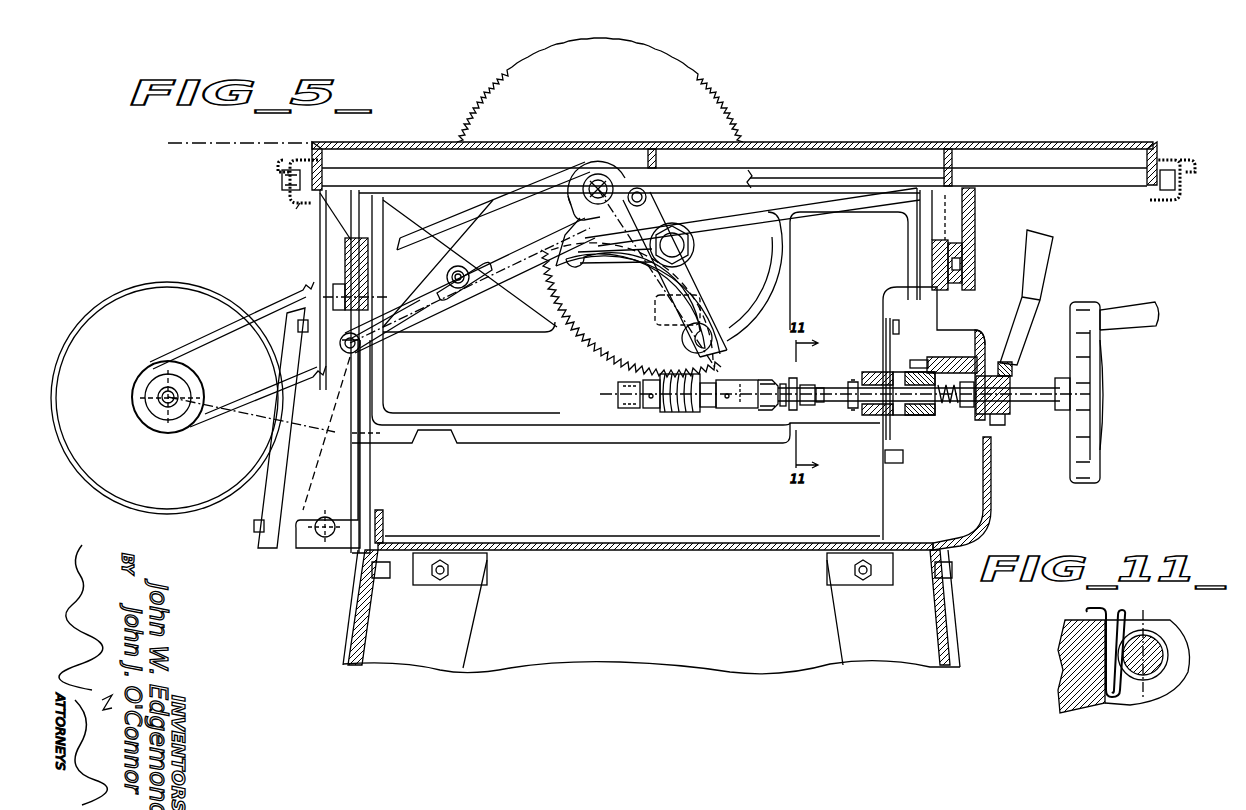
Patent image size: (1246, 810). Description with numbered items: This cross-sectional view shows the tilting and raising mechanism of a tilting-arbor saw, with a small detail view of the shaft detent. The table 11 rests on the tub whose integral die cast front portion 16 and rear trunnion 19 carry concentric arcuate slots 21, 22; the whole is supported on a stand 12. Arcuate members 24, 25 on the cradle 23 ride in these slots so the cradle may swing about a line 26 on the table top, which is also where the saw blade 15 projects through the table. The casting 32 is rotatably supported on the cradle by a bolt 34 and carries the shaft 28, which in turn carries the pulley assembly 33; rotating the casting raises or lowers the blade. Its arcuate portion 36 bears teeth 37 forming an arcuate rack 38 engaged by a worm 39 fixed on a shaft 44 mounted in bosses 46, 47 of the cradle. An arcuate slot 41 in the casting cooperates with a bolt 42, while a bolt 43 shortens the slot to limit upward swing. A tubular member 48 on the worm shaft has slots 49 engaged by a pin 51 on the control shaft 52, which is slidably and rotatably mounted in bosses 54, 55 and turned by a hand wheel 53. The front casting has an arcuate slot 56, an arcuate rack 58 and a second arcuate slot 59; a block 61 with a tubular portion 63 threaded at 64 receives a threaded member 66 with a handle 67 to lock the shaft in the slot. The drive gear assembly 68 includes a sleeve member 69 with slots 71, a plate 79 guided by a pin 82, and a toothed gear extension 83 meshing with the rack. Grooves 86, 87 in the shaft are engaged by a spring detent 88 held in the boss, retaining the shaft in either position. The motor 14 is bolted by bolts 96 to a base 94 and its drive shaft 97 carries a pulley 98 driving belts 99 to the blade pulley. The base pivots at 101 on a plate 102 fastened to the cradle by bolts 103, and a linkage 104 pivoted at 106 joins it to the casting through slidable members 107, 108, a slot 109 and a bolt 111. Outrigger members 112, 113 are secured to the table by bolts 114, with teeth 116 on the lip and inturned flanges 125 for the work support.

In FIG. 5, the table 11 is at (1018, 143).
In FIG. 5, the stand 12 is at (425, 662).
In FIG. 5, the motor 14 is at (120, 300).
In FIG. 5, the saw blade 15 is at (713, 95).
In FIG. 5, the integral die cast front portion 16 is at (976, 265).
In FIG. 5, the rear trunnion 19 is at (344, 265).
In FIG. 5, the arcuate slot 21 is at (965, 252).
In FIG. 5, the arcuate slot 22 is at (346, 260).
In FIG. 5, the cradle 23 is at (874, 210).
In FIG. 11, the cradle 23 is at (1075, 712).
In FIG. 5, the arcuate member 24 is at (935, 262).
In FIG. 5, the arcuate member 25 is at (362, 275).
In FIG. 5, the line 26 is at (216, 142).
In FIG. 5, the shaft 28 is at (598, 180).
In FIG. 5, the casting 32 is at (660, 207).
In FIG. 5, the pulley assembly 33 is at (612, 162).
In FIG. 5, the bolt 34 is at (694, 245).
In FIG. 5, the arcuate portion 36 is at (560, 307).
In FIG. 5, the teeth 37 is at (578, 338).
In FIG. 5, the arcuate rack 38 is at (586, 357).
In FIG. 5, the worm 39 is at (675, 412).
In FIG. 5, the arcuate slot 41 is at (608, 312).
In FIG. 5, the bolt 42 is at (712, 303).
In FIG. 5, the bolt 43 is at (718, 325).
In FIG. 5, the shaft 44 is at (625, 405).
In FIG. 5, the boss 46 is at (648, 406).
In FIG. 5, the boss 47 is at (707, 408).
In FIG. 5, the tubular member 48 is at (728, 408).
In FIG. 5, the slots 49 is at (762, 410).
In FIG. 5, the pin 51 is at (779, 382).
In FIG. 5, the shaft 52 is at (826, 384).
In FIG. 11, the shaft 52 is at (1160, 640).
In FIG. 5, the control hand wheel 53 is at (1105, 375).
In FIG. 5, the boss 54 is at (796, 378).
In FIG. 11, the boss 54 is at (1153, 625).
In FIG. 5, the boss 55 is at (870, 380).
In FIG. 5, the arcuate slot 56 is at (972, 362).
In FIG. 5, the arcuate rack 58 is at (928, 352).
In FIG. 5, the second arcuate slot 59 is at (995, 424).
In FIG. 5, the block 61 is at (958, 412).
In FIG. 5, the tubular portion 63 is at (1002, 414).
In FIG. 5, the threads 64 is at (1012, 380).
In FIG. 5, the threaded member 66 is at (1012, 400).
In FIG. 5, the handle 67 is at (1042, 260).
In FIG. 5, the drive gear assembly 68 is at (916, 437).
In FIG. 5, the sleeve member 69 is at (875, 408).
In FIG. 5, the slots 71 is at (850, 408).
In FIG. 5, the plate 79 is at (900, 318).
In FIG. 5, the pin 82 is at (886, 323).
In FIG. 5, the toothed gear extension 83 is at (925, 415).
In FIG. 5, the circumferential groove 86 is at (822, 404).
In FIG. 11, the circumferential groove 87 is at (1168, 657).
In FIG. 11, the spring detent 88 is at (1125, 700).
In FIG. 5, the base 94 is at (280, 548).
In FIG. 5, the bolts 96 is at (300, 318).
In FIG. 5, the drive shaft 97 is at (158, 402).
In FIG. 5, the pulley 98 is at (145, 385).
In FIG. 5, the belts 99 is at (215, 345).
In FIG. 5, the pivot 101 is at (323, 540).
In FIG. 5, the plate 102 is at (365, 503).
In FIG. 5, the bolts 103 is at (388, 412).
In FIG. 5, the linkage 104 is at (432, 276).
In FIG. 5, the pivot 106 is at (362, 348).
In FIG. 5, the slidable member 107 is at (415, 320).
In FIG. 5, the slidable member 108 is at (512, 232).
In FIG. 5, the slot 109 is at (475, 275).
In FIG. 5, the bolt 111 is at (460, 290).
In FIG. 5, the outrigger member 112 is at (1180, 158).
In FIG. 5, the outrigger member 113 is at (292, 158).
In FIG. 5, the bolts 114 is at (285, 195).
In FIG. 5, the teeth 116 is at (280, 178).
In FIG. 5, the inturned flange 125 is at (300, 205).